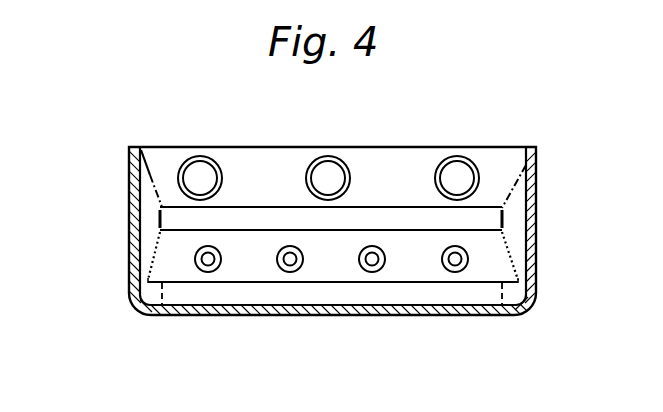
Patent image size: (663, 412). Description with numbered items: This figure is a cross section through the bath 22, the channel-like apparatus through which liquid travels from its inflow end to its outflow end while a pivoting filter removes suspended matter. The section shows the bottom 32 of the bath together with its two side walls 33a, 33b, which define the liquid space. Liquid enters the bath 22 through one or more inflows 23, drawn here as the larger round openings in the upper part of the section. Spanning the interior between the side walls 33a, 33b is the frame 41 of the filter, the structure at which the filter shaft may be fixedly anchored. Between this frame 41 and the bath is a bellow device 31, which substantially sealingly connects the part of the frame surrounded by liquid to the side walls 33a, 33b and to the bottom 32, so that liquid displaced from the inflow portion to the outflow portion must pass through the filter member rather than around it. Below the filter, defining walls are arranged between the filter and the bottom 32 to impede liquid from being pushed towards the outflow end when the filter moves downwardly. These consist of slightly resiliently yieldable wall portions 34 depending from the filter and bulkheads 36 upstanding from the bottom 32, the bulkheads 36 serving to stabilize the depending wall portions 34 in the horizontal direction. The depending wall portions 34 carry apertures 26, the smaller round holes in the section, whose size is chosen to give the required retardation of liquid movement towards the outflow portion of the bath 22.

The bath 22 is at (170, 320).
The inflow 23 is at (208, 157).
The apertures 26 is at (208, 272).
The bellow device 31 is at (150, 247).
The bottom 32 is at (280, 305).
The side wall 33a is at (532, 205).
The side wall 33b is at (133, 192).
The depending wall portions 34 is at (413, 262).
The bulkheads 36 is at (470, 292).
The frame 41 is at (162, 208).